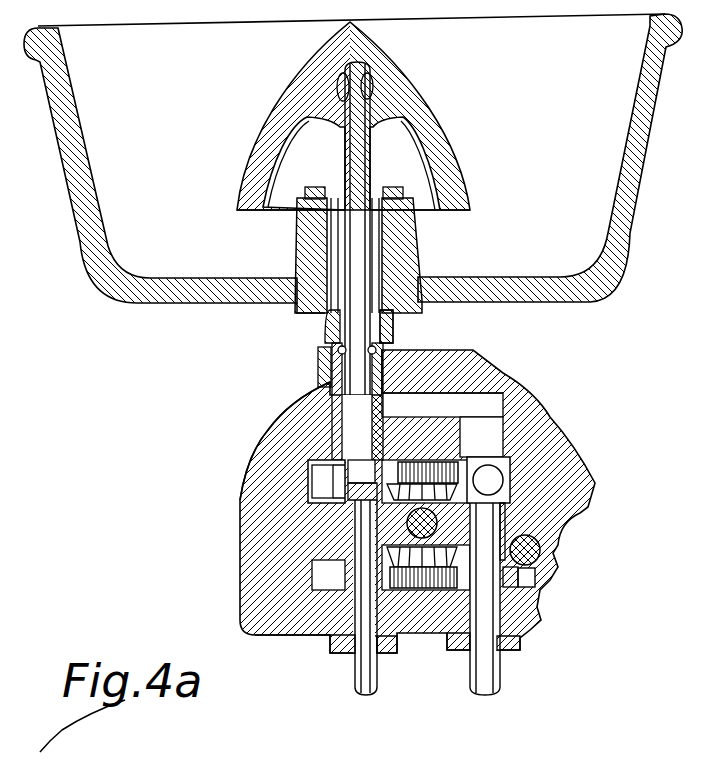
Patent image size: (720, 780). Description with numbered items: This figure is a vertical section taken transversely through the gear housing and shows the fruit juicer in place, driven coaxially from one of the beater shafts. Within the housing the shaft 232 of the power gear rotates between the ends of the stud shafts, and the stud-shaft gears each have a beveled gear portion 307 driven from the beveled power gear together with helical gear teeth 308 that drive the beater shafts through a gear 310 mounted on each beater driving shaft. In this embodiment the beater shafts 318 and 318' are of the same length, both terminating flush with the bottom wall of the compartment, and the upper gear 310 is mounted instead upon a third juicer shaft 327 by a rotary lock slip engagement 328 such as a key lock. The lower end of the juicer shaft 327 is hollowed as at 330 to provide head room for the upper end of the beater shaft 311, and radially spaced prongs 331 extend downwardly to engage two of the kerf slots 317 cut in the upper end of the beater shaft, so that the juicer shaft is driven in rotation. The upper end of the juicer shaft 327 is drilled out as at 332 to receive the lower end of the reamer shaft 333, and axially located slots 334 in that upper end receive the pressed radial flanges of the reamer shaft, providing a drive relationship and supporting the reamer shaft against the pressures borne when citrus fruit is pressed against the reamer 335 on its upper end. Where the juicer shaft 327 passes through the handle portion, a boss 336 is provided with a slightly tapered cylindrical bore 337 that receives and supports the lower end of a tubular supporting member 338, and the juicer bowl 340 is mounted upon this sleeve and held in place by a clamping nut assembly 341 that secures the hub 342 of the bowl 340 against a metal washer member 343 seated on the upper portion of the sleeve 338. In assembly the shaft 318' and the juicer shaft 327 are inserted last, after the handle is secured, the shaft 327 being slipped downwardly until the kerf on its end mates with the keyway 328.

The reamer 335 is at (423, 83).
The clamping nut assembly 341 is at (398, 186).
The hub of the bowl 342 is at (407, 238).
The juicer bowl 340 is at (487, 297).
The axially located slots 334 is at (393, 331).
The metal washer member 343 is at (320, 314).
The boss 336 is at (318, 352).
The cylindrical bore 337 is at (330, 370).
The tubular supporting member 338 is at (318, 380).
The juicer shaft 327 is at (340, 400).
The reamer shaft 333 is at (360, 428).
The drilled-out upper end 332 is at (347, 462).
The gear 310 is at (308, 503).
The rotary lock slip engagement 328 is at (345, 497).
The hollowed lower end 330 is at (345, 540).
The radially spaced prongs 331 is at (380, 553).
The helical gear teeth 308 is at (455, 478).
The beveled gear portion 307 is at (453, 490).
The notches 317 is at (500, 512).
The shaft of the power gear 232 is at (500, 531).
The beater supporting shaft 318 is at (326, 650).
The beater supporting shaft 318' is at (542, 630).
The beater shaft 311 is at (500, 675).